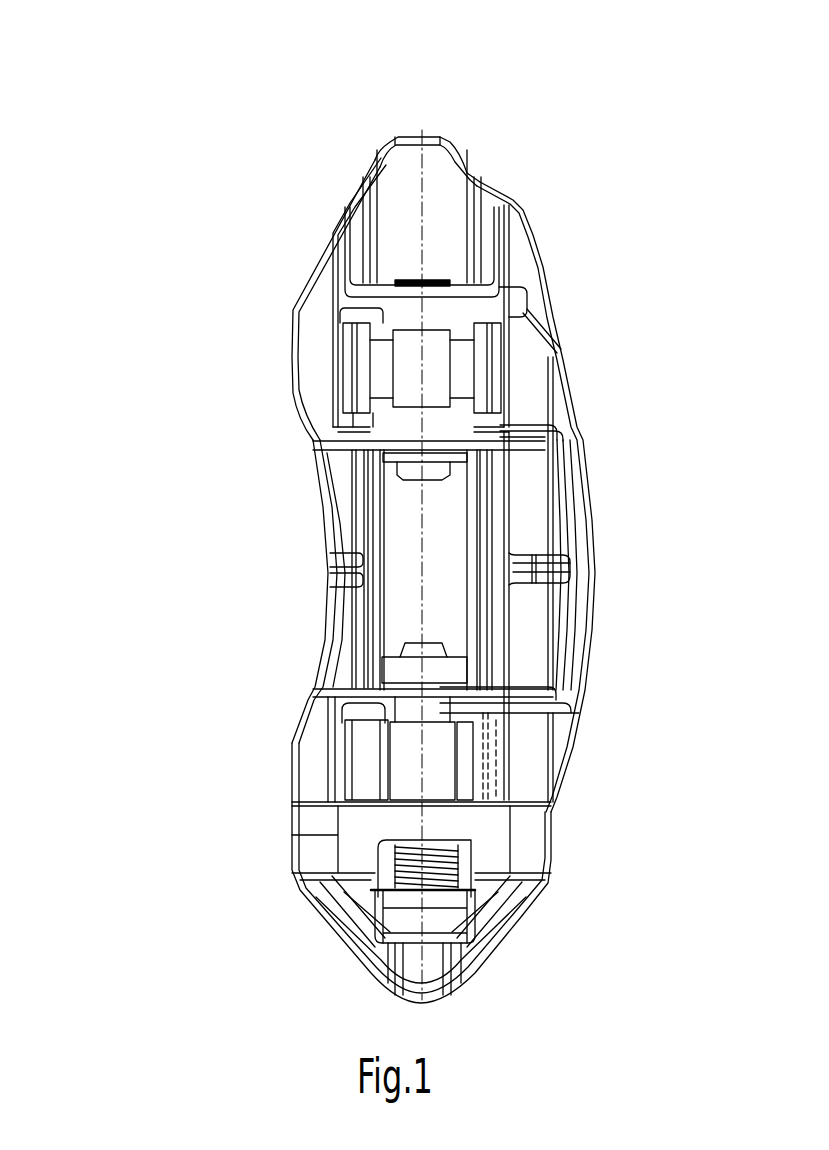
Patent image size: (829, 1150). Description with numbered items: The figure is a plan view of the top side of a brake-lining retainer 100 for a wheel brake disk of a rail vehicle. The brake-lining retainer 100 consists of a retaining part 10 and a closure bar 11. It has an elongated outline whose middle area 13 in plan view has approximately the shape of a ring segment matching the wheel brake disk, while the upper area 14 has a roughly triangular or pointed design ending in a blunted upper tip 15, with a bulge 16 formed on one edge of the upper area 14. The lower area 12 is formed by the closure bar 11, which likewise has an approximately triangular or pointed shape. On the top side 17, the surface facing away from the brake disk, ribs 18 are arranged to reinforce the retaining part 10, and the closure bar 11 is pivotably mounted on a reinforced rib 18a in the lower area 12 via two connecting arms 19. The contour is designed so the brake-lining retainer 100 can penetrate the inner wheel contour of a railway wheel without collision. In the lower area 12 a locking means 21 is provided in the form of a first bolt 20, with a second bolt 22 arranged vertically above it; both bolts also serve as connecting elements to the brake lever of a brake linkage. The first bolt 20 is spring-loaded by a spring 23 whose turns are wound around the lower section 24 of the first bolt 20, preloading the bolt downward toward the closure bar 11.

The brake-lining retainer 100 is at (172, 100).
The retaining part 10 is at (465, 530).
The closure bar 11 is at (521, 900).
The lower area 12 is at (218, 818).
The middle area 13 is at (238, 573).
The upper area 14 is at (258, 233).
The upper tip 15 is at (421, 135).
The bulge 16 is at (525, 210).
The top side 17 is at (460, 593).
The ribs 18 is at (398, 430).
The reinforced rib 18a is at (460, 793).
The connecting arms 19 is at (523, 843).
The first bolt 20 is at (455, 760).
The locking means 21 is at (413, 777).
The second bolt 22 is at (420, 380).
The spring 23 is at (381, 870).
The lower section 24 is at (375, 887).